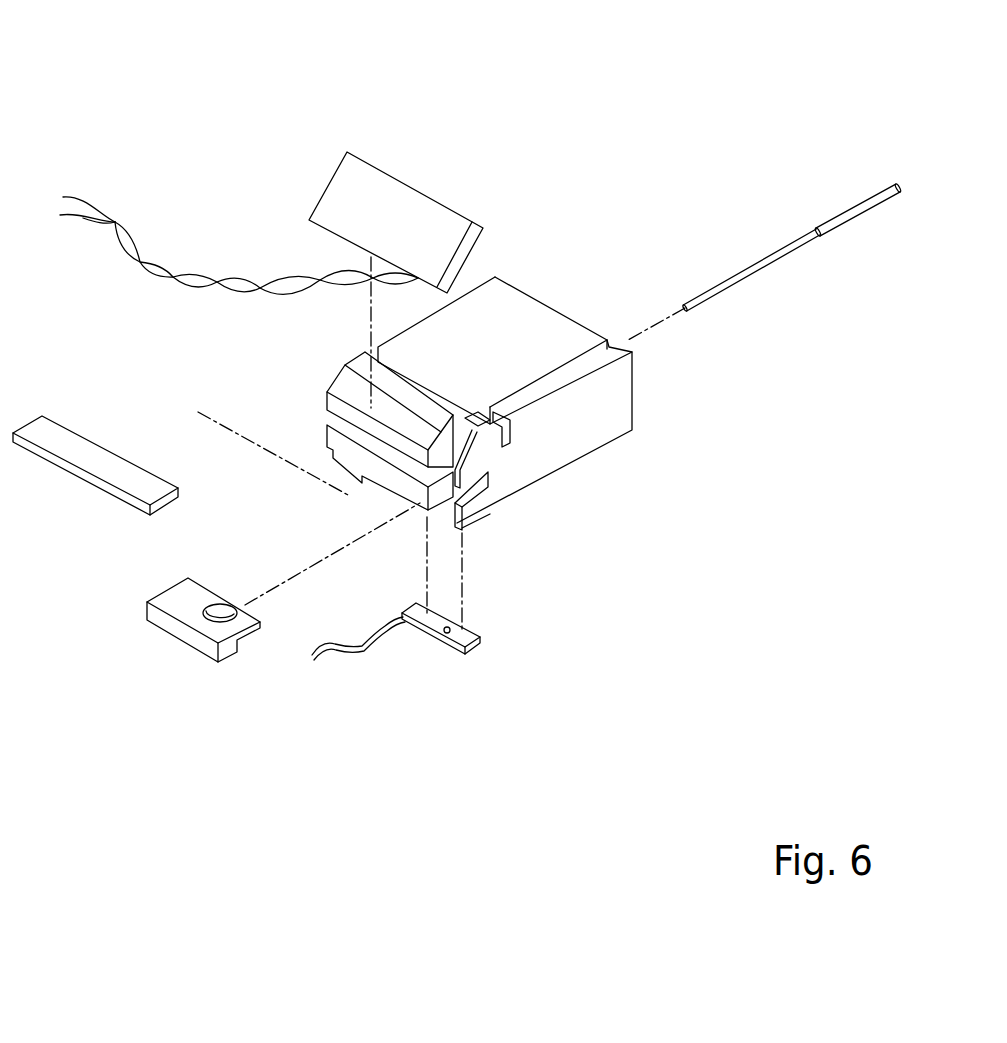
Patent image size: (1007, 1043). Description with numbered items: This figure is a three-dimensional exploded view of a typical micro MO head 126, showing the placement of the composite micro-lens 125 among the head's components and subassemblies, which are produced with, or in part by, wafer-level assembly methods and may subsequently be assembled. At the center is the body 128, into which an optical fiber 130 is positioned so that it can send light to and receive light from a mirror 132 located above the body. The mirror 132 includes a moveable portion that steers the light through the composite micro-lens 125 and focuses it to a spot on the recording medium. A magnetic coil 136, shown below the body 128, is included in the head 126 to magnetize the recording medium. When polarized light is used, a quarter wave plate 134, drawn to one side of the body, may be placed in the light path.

The composite micro-lens 125 is at (197, 655).
The micro MO head 126 is at (692, 80).
The body 128 is at (562, 477).
The optical fiber 130 is at (758, 275).
The mirror 132 is at (407, 182).
The quarter wave plate 134 is at (52, 467).
The magnetic coil 136 is at (455, 653).